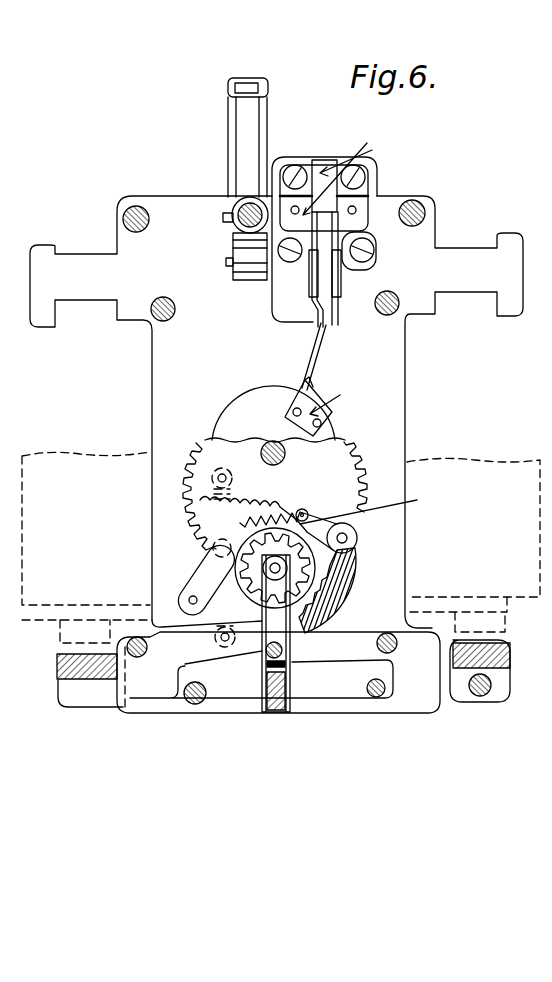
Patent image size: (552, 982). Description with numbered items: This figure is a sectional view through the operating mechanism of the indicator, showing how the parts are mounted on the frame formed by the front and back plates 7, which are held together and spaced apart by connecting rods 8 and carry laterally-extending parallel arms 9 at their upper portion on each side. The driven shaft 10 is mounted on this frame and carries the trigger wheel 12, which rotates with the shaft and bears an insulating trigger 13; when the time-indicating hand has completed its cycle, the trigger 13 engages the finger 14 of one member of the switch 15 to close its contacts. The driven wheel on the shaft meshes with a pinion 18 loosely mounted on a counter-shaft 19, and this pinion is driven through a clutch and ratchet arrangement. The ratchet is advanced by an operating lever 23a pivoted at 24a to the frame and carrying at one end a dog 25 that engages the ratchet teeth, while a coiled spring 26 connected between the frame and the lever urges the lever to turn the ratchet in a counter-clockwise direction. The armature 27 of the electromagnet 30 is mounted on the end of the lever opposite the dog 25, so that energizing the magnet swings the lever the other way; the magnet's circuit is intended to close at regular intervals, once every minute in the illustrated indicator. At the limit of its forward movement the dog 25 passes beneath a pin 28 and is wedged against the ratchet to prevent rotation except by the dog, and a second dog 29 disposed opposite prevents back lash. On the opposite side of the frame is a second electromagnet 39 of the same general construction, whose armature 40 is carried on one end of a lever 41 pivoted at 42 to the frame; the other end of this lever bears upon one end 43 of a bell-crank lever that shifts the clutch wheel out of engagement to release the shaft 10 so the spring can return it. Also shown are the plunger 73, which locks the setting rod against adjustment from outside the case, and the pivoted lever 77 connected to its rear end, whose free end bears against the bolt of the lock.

The front and back plates 7 is at (175, 199).
The connecting rods 8 is at (157, 297).
The laterally-extending parallel arms 9 is at (75, 294).
The driven shaft 10 is at (273, 441).
The trigger wheel 12 is at (243, 405).
The insulating trigger 13 is at (307, 391).
The finger 14 is at (307, 344).
The switch 15 is at (378, 194).
The pinion 18 is at (348, 514).
The counter-shaft 19 is at (288, 567).
The operating lever 23a is at (343, 583).
The pivot 24a is at (136, 640).
The dog 25 is at (374, 506).
The coiled spring 26 is at (205, 623).
The armature 27 is at (57, 666).
The pin 28 is at (314, 496).
The second dog 29 is at (228, 551).
The electromagnet 30 is at (86, 547).
The electromagnet 39 is at (473, 545).
The armature 40 is at (510, 660).
The lever 41 is at (340, 654).
The pivot 42 is at (278, 672).
The end of bell-crank lever 43 is at (262, 673).
The plunger 73 is at (245, 207).
The pivoted lever 77 is at (230, 122).